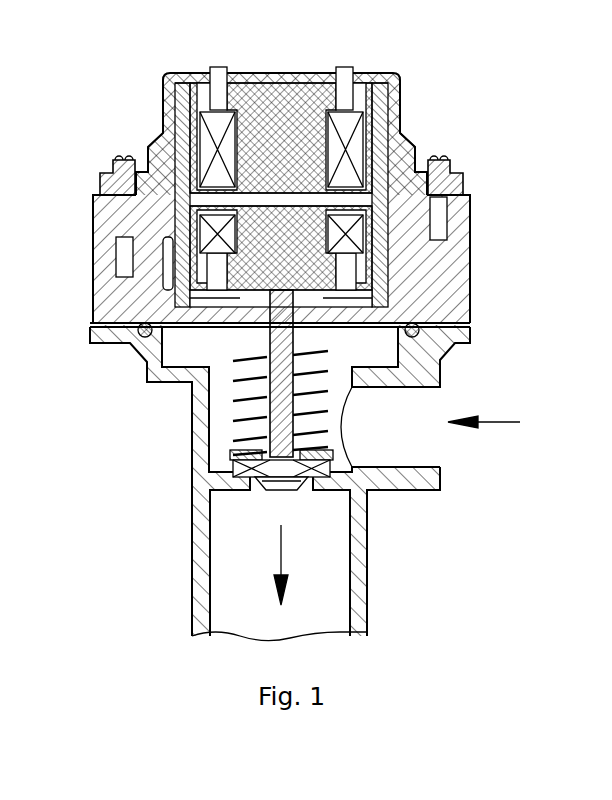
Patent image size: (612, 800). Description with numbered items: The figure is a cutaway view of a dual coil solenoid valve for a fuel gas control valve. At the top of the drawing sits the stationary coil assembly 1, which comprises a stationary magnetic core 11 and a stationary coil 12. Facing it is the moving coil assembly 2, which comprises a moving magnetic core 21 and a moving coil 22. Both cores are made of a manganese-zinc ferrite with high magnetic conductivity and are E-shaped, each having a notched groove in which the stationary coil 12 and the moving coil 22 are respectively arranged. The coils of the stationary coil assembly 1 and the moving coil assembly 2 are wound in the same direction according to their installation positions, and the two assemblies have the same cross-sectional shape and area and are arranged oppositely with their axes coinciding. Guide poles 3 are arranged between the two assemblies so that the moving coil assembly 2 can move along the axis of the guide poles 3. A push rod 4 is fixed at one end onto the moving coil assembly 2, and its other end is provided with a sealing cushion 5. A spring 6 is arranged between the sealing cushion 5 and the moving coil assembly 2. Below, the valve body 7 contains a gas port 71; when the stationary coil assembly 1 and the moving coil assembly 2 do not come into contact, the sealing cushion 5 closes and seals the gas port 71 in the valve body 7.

The stationary coil assembly 1 is at (263, 77).
The stationary magnetic core 11 is at (400, 95).
The stationary coil 12 is at (413, 145).
The moving coil assembly 2 is at (372, 277).
The moving magnetic core 21 is at (368, 235).
The moving coil 22 is at (378, 205).
The guide pole 3 is at (120, 166).
The push rod 4 is at (278, 388).
The sealing cushion 5 is at (235, 465).
The spring 6 is at (235, 418).
The valve body 7 is at (355, 484).
The gas port 71 is at (303, 490).